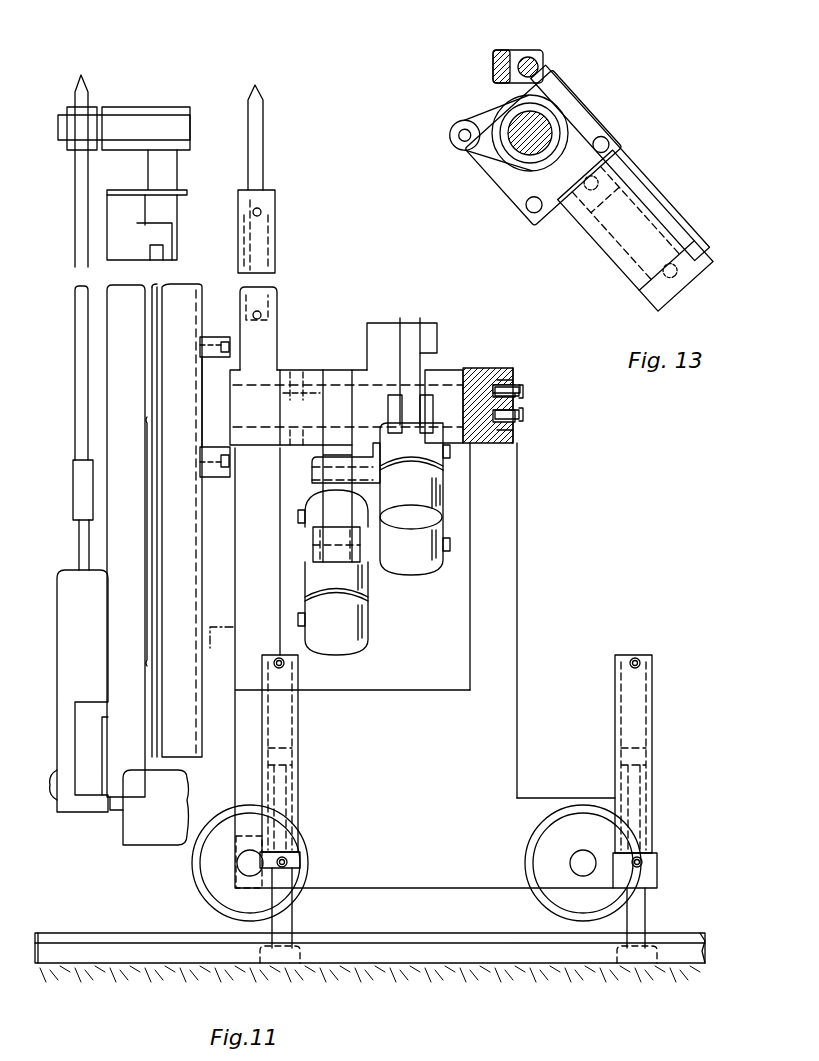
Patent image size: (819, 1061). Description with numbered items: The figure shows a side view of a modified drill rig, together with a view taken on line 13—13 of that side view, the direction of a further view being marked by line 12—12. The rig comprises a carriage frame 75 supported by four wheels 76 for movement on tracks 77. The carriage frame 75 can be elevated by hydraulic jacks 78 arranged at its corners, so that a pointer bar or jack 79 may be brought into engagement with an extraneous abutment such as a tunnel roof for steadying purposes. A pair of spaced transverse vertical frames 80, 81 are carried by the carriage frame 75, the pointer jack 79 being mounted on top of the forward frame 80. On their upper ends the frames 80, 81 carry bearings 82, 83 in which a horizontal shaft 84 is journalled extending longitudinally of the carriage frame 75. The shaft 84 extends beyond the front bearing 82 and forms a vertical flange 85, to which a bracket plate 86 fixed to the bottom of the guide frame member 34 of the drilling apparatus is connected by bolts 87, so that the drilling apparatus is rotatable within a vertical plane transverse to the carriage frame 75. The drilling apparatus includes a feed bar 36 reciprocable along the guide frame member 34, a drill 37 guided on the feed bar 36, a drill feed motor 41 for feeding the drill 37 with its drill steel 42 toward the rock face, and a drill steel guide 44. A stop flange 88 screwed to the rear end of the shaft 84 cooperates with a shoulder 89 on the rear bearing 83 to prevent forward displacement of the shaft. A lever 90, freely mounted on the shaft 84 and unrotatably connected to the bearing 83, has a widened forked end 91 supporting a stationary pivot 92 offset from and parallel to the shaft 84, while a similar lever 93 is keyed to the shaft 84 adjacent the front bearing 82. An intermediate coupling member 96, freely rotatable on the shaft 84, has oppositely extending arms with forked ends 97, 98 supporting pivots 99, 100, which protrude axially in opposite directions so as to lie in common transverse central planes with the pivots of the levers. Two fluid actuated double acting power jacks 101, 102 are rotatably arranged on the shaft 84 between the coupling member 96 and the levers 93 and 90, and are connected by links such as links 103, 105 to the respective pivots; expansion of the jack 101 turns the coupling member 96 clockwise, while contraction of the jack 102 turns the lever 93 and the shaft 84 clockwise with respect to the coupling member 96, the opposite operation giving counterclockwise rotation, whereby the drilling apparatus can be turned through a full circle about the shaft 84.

In FIG. 11, the view line 12— 12 is at (283, 360).
In FIG. 11, the view line 13— 13 is at (336, 668).
In FIG. 11, the guide frame member 34 is at (180, 520).
In FIG. 11, the feed bar 36 is at (120, 522).
In FIG. 11, the drill 37 is at (75, 655).
In FIG. 11, the drill feed motor 41 is at (145, 832).
In FIG. 11, the drill steel 42 is at (85, 352).
In FIG. 11, the drill steel guide 44 is at (85, 127).
In FIG. 11, the carriage frame 75 is at (500, 752).
In FIG. 11, the wheels 76 is at (222, 880).
In FIG. 11, the tracks 77 is at (95, 965).
In FIG. 11, the hydraulic jacks 78 is at (290, 742).
In FIG. 11, the pointer bar or jack 79 is at (262, 160).
In FIG. 11, the forward transverse vertical frame 80 is at (245, 567).
In FIG. 11, the rear transverse vertical frame 81 is at (508, 655).
In FIG. 11, the front bearing 82 is at (240, 398).
In FIG. 11, the rear bearing 83 is at (485, 372).
In FIG. 11, the horizontal shaft 84 is at (520, 411).
In FIG. 13, the horizontal shaft 84 is at (537, 128).
In FIG. 11, the vertical flange 85 is at (219, 365).
In FIG. 11, the bracket plate 86 is at (211, 434).
In FIG. 11, the bolts 87 is at (220, 470).
In FIG. 11, the stop flange 88 is at (520, 387).
In FIG. 11, the shoulder 89 is at (505, 368).
In FIG. 11, the lever 90 is at (447, 377).
In FIG. 13, the lever 90 is at (492, 112).
In FIG. 13, the forked end 91 is at (464, 120).
In FIG. 13, the stationary pivot 92 is at (463, 135).
In FIG. 11, the lever 93 is at (292, 380).
In FIG. 11, the intermediate coupling member 96 is at (362, 395).
In FIG. 11, the forked end 97 is at (378, 335).
In FIG. 13, the forked end 97 is at (500, 50).
In FIG. 11, the forked end 98 is at (315, 468).
In FIG. 11, the pivot 99 is at (392, 330).
In FIG. 13, the pivot 99 is at (538, 60).
In FIG. 11, the pivot 100 is at (322, 480).
In FIG. 11, the power jack 101 is at (430, 575).
In FIG. 13, the power jack 101 is at (652, 212).
In FIG. 11, the power jack 102 is at (360, 647).
In FIG. 13, the link 103 is at (585, 125).
In FIG. 13, the link 105 is at (508, 178).